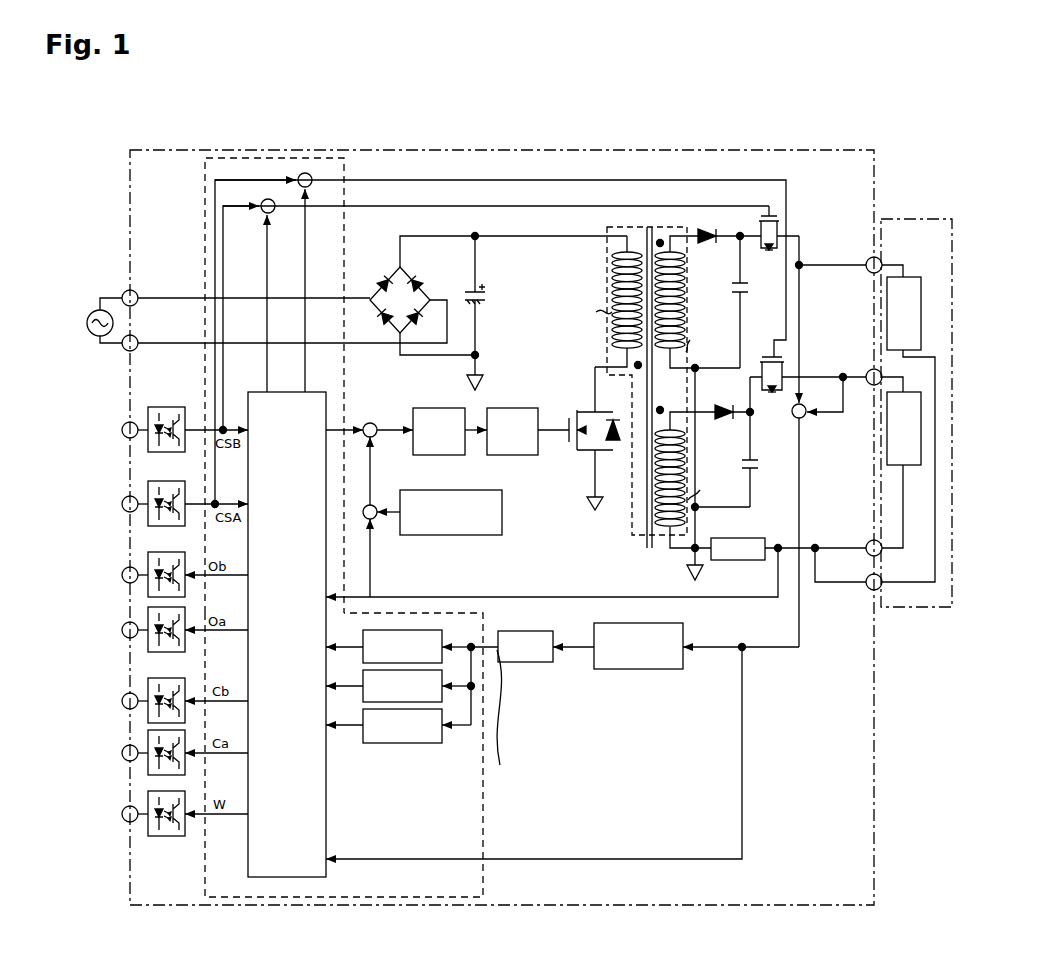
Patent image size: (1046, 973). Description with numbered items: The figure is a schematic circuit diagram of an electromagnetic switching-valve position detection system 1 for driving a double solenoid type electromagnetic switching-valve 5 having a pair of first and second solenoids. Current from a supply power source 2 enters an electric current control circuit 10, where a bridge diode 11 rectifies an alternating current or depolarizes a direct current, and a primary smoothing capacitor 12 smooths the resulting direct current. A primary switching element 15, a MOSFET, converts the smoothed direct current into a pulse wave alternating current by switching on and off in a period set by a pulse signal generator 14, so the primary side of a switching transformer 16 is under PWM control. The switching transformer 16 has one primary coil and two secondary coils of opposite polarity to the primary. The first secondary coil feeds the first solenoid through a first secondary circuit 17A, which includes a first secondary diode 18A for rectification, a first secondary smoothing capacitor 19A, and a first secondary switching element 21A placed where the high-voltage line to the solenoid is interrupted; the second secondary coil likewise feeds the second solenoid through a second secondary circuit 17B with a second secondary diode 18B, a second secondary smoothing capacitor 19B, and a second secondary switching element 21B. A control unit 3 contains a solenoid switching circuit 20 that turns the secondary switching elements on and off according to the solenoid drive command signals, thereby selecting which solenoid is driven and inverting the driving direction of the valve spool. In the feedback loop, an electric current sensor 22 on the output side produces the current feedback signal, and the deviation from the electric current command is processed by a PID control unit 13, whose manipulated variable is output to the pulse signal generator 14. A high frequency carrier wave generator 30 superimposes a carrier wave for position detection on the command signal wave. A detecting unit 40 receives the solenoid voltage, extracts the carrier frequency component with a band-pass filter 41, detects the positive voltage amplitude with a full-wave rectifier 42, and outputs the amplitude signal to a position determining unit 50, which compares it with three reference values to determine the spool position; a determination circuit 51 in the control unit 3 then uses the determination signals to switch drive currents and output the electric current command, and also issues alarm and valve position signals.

The electromagnetic switching-valve position detection system 1 is at (122, 146).
The supply power source 2 is at (88, 310).
The control unit 3 is at (484, 883).
The electromagnetic switching-valve 5 is at (917, 217).
The electric current control circuit 10 is at (798, 172).
The bridge diode 11 is at (406, 262).
The primary smoothing capacitor 12 is at (478, 293).
The PID control unit 13 is at (421, 408).
The pulse signal generator 14 is at (496, 408).
The primary switching element 15 is at (590, 452).
The switching transformer 16 is at (648, 227).
The first secondary circuit 17A is at (749, 513).
The second secondary circuit 17B is at (746, 341).
The first secondary diode 18A is at (722, 414).
The second secondary diode 18B is at (707, 245).
The first secondary smoothing capacitor 19A is at (746, 464).
The second secondary smoothing capacitor 19B is at (742, 290).
The solenoid switching circuit 20 is at (248, 168).
The first secondary switching element 21A is at (784, 372).
The second secondary switching element 21B is at (783, 232).
The electric current sensor 22 is at (748, 561).
The high frequency carrier wave generator 30 is at (443, 535).
The detecting unit 40 is at (619, 704).
The band-pass filter 41 is at (638, 670).
The full-wave rectifier 42 is at (520, 663).
The position determining unit 50 is at (412, 706).
The determination circuit 51 is at (328, 818).